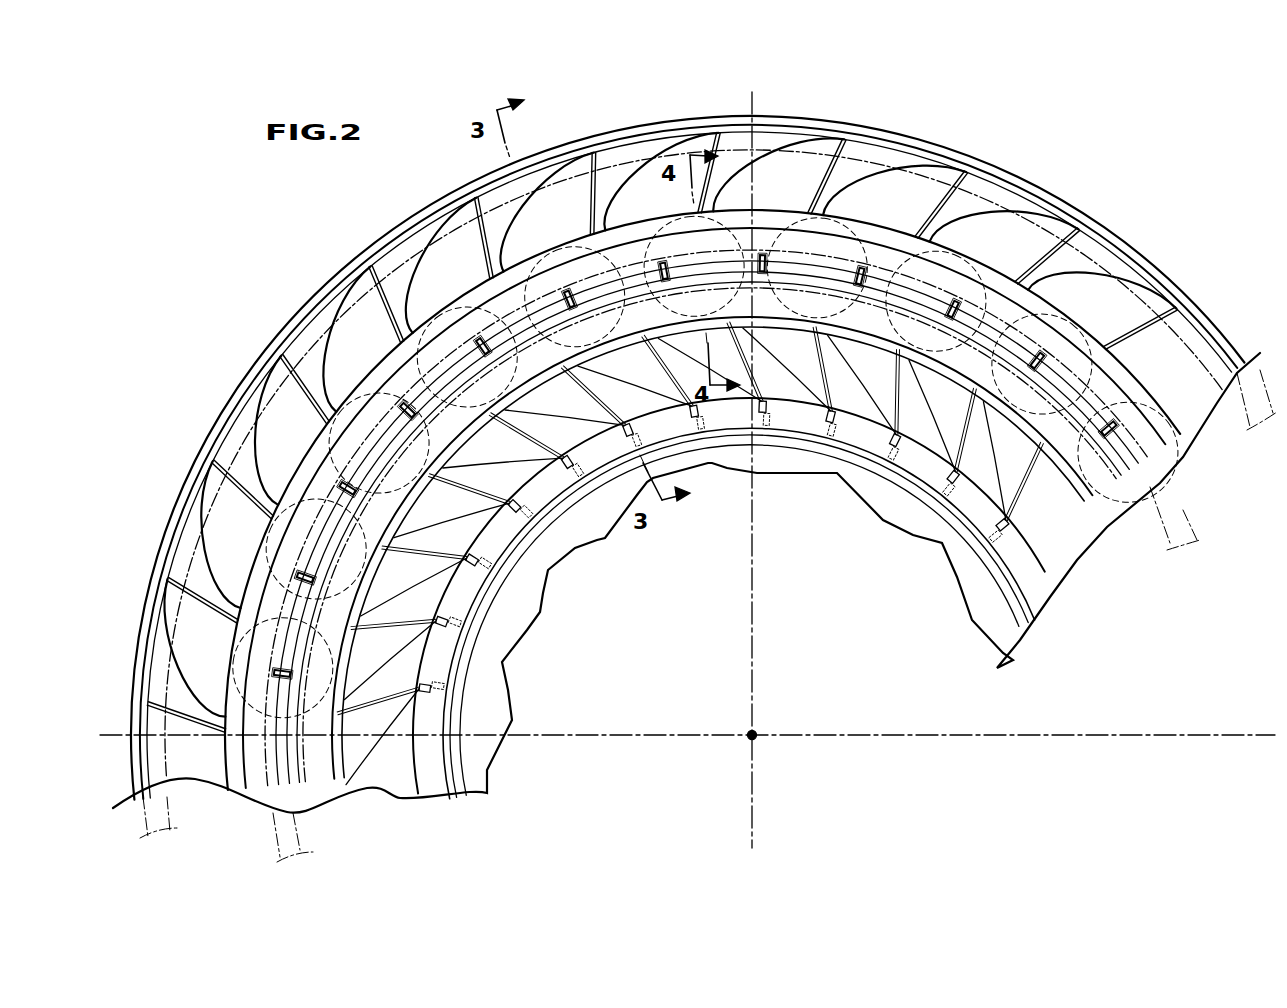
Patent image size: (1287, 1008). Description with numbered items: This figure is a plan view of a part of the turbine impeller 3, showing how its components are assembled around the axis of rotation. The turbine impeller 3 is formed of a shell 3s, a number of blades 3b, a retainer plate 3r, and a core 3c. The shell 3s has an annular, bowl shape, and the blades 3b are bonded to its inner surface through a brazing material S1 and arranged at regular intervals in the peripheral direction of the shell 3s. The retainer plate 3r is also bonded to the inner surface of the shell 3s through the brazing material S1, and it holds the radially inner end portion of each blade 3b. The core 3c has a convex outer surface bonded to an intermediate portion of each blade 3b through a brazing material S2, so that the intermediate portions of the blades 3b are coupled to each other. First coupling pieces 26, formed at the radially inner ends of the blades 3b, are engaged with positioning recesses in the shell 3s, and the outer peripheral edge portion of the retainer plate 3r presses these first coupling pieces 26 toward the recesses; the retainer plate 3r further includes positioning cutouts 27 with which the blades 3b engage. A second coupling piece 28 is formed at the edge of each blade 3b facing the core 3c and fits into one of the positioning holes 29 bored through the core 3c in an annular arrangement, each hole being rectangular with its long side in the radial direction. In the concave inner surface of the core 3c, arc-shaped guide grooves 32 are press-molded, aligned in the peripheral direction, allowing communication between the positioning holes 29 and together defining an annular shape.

The turbine impeller 3 is at (1038, 182).
The blade 3b is at (657, 180).
The shell 3s is at (1117, 237).
The core 3c is at (970, 260).
The retainer plate 3r is at (993, 617).
The first coupling piece 26 is at (637, 427).
The positioning cutout 27 is at (623, 410).
The second coupling piece 28 is at (660, 268).
The positioning hole 29 is at (668, 262).
The guide groove 32 is at (623, 287).
The brazing material S1 is at (1237, 413).
The brazing material S2 is at (1160, 517).